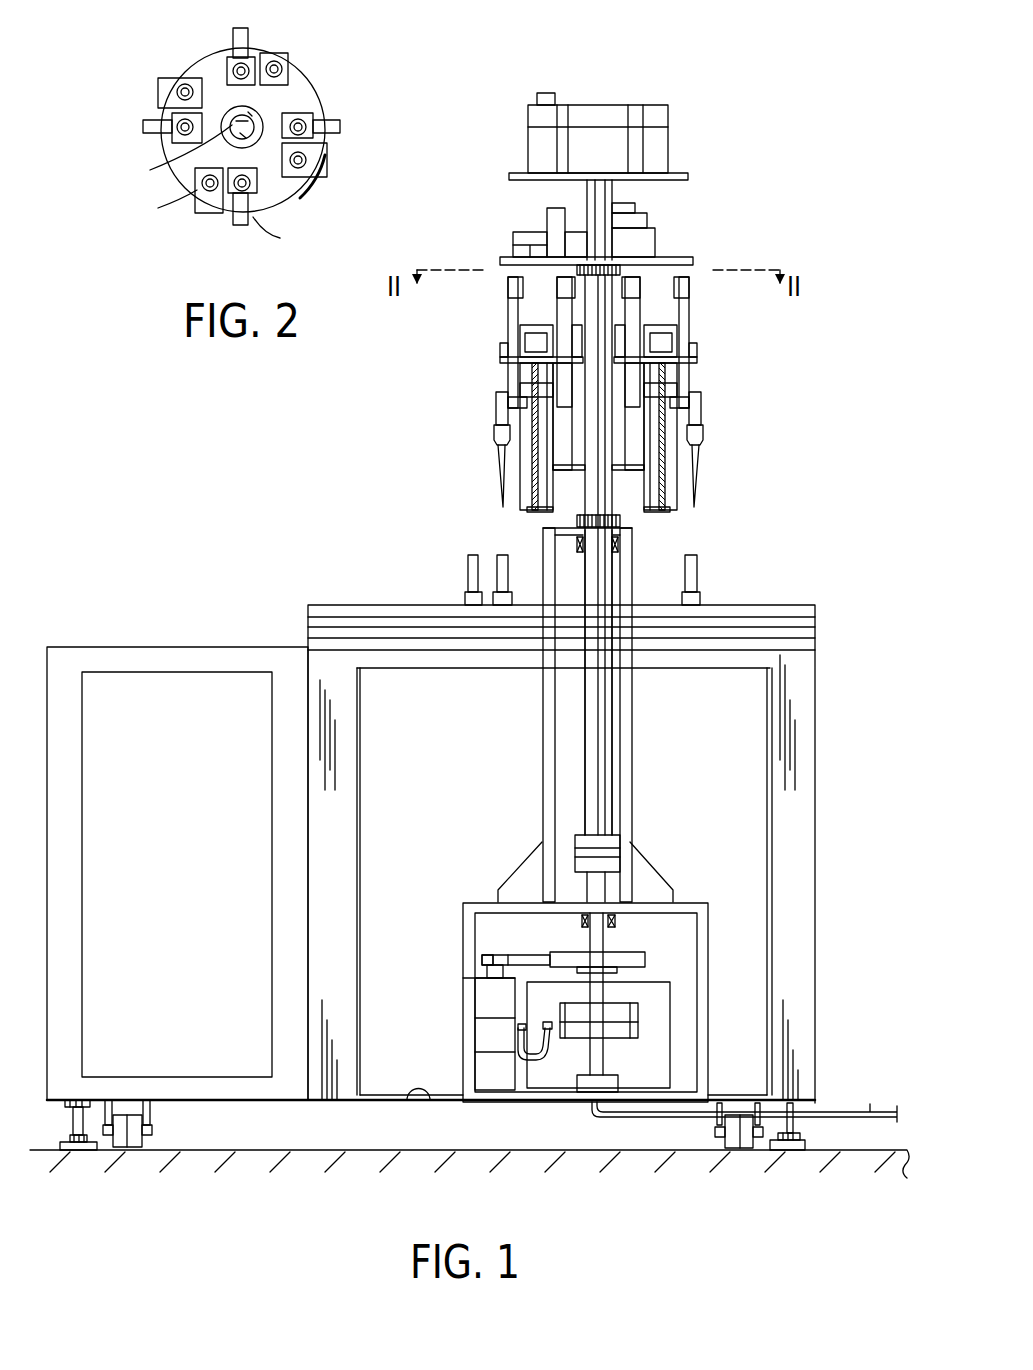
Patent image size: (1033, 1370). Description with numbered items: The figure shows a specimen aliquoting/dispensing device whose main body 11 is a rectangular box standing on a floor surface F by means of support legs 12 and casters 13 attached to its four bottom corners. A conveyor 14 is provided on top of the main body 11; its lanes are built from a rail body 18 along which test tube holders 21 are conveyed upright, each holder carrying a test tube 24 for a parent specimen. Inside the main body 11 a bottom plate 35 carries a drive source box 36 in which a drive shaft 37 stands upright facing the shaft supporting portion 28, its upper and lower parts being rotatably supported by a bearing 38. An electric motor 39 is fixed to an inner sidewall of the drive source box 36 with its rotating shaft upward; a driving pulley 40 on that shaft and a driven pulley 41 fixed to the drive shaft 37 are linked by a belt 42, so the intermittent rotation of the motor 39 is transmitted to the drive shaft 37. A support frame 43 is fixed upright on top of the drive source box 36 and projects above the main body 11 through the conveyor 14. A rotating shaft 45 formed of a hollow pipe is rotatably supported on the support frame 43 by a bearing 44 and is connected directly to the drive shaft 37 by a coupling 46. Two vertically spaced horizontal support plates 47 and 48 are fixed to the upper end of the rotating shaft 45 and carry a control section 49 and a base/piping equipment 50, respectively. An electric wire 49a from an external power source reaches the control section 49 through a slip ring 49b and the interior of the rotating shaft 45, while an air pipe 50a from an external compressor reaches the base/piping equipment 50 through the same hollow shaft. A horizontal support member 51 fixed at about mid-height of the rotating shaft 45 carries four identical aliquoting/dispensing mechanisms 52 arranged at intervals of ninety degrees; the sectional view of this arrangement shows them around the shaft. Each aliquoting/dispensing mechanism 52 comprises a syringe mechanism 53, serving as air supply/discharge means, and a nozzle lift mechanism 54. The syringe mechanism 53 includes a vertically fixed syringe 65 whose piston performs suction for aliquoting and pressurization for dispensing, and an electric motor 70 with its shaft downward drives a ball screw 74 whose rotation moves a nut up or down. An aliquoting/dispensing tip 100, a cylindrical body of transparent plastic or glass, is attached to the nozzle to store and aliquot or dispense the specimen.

In FIG. 1, the main body 11 is at (815, 807).
In FIG. 1, the support legs 12 is at (78, 1122).
In FIG. 1, the casters 13 is at (135, 1132).
In FIG. 1, the conveyor 14 is at (773, 605).
In FIG. 1, the rail body 18 is at (350, 610).
In FIG. 1, the test tube holder 21 is at (465, 600).
In FIG. 1, the test tube 24 is at (468, 563).
In FIG. 1, the shaft supporting portion 28 is at (632, 552).
In FIG. 1, the bottom plate 35 is at (432, 1102).
In FIG. 1, the drive source box 36 is at (703, 982).
In FIG. 1, the drive shaft 37 is at (600, 940).
In FIG. 1, the bearing 38 is at (618, 915).
In FIG. 1, the electric motor 39 is at (490, 1006).
In FIG. 1, the driving pulley 40 is at (490, 960).
In FIG. 1, the driven pulley 41 is at (647, 960).
In FIG. 1, the belt 42 is at (528, 957).
In FIG. 1, the support frame 43 is at (630, 733).
In FIG. 1, the bearing 44 is at (577, 548).
In FIG. 2, the rotating shaft 45 is at (255, 110).
In FIG. 1, the rotating shaft 45 is at (594, 707).
In FIG. 1, the coupling 46 is at (602, 840).
In FIG. 1, the support plate 47 is at (690, 177).
In FIG. 1, the support plate 48 is at (690, 250).
In FIG. 1, the control section 49 is at (670, 125).
In FIG. 2, the electric wire 49a is at (285, 200).
In FIG. 1, the electric wire 49a is at (548, 1062).
In FIG. 1, the slip ring 49b is at (627, 1028).
In FIG. 1, the base/piping equipment 50 is at (650, 213).
In FIG. 2, the air pipe 50a is at (152, 171).
In FIG. 1, the air pipe 50a is at (663, 1118).
In FIG. 2, the support member 51 is at (300, 103).
In FIG. 1, the support member 51 is at (693, 357).
In FIG. 2, the aliquoting/dispensing mechanism 52 is at (150, 106).
In FIG. 1, the aliquoting/dispensing mechanism 52 is at (548, 317).
In FIG. 2, the syringe mechanism 53 is at (165, 208).
In FIG. 2, the nozzle lift mechanism 54 is at (279, 235).
In FIG. 1, the syringe 65 is at (562, 303).
In FIG. 1, the electric motor 70 is at (663, 340).
In FIG. 1, the ball screw 74 is at (533, 422).
In FIG. 1, the aliquoting/dispensing tip 100 is at (503, 487).
In FIG. 1, the floor surface F is at (858, 1150).